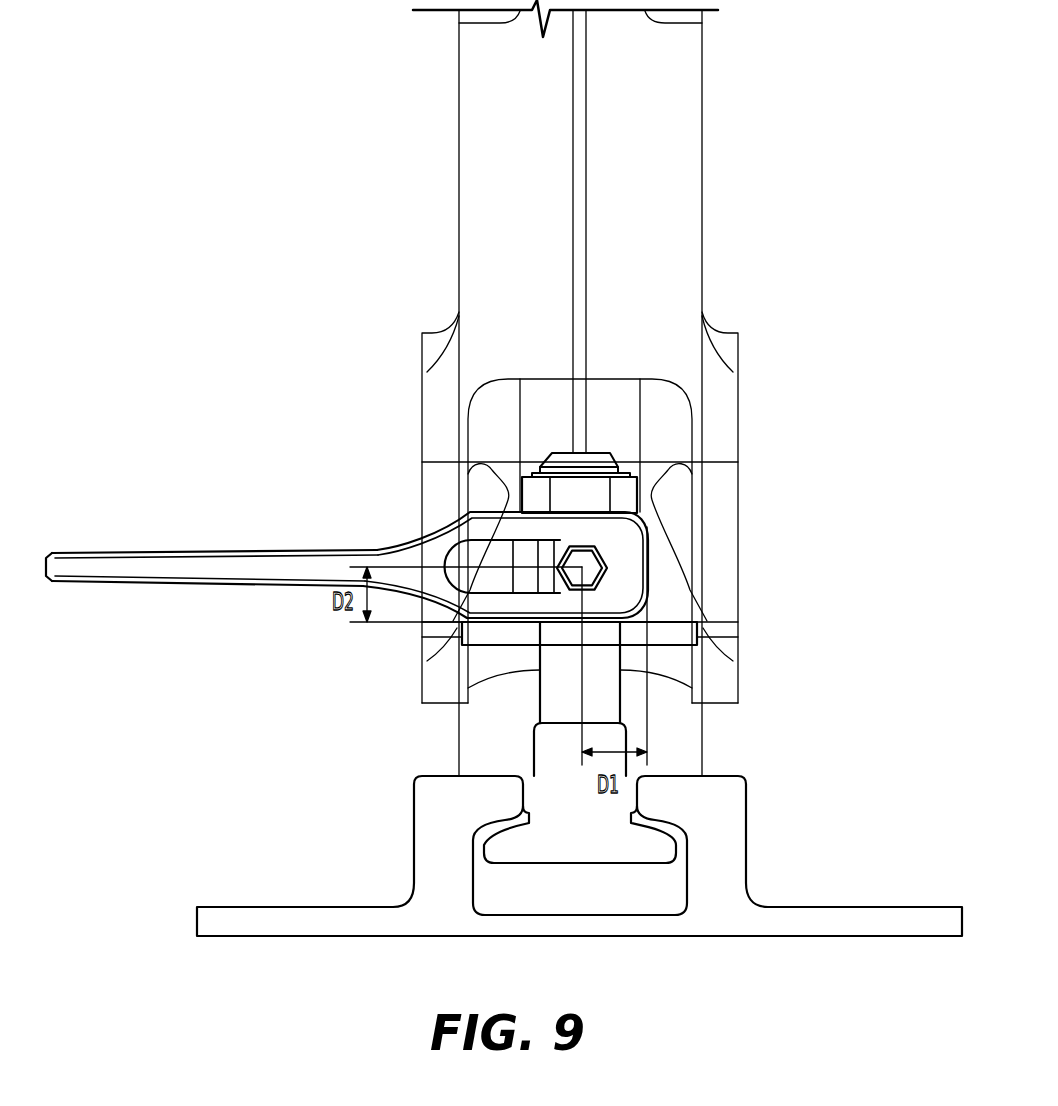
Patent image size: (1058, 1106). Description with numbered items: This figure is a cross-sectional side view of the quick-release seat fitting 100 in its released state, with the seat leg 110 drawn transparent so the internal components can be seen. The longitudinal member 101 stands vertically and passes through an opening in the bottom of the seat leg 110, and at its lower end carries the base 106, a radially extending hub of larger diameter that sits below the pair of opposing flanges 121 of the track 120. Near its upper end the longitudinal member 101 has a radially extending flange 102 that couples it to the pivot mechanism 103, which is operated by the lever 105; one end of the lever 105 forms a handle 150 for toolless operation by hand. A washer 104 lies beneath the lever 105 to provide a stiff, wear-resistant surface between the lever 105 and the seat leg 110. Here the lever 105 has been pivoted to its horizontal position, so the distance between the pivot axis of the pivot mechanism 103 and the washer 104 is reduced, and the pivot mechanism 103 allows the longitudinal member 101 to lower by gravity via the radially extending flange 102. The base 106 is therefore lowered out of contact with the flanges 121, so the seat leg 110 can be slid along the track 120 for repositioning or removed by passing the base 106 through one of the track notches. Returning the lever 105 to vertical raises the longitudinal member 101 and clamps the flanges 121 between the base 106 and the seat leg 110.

The quick-release seat fitting 100 is at (390, 141).
The longitudinal member 101 is at (553, 743).
The radially extending flange 102 is at (630, 487).
The pivot mechanism 103 is at (590, 549).
The washer 104 is at (700, 623).
The lever 105 is at (373, 543).
The base 106 is at (580, 850).
The seat leg 110 is at (678, 190).
The track 120 is at (855, 913).
The flanges 121 is at (487, 793).
The handle 150 is at (87, 550).